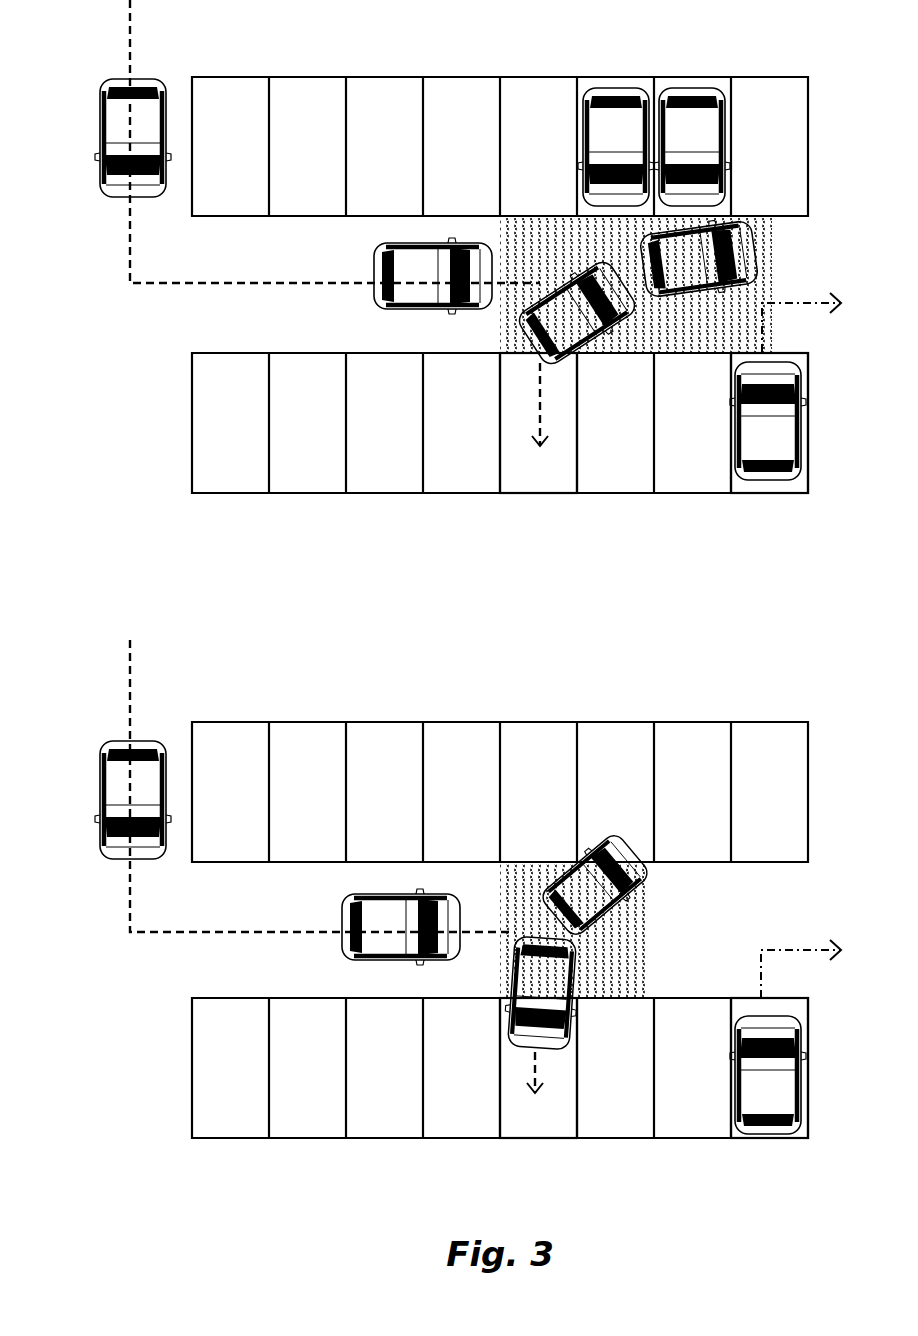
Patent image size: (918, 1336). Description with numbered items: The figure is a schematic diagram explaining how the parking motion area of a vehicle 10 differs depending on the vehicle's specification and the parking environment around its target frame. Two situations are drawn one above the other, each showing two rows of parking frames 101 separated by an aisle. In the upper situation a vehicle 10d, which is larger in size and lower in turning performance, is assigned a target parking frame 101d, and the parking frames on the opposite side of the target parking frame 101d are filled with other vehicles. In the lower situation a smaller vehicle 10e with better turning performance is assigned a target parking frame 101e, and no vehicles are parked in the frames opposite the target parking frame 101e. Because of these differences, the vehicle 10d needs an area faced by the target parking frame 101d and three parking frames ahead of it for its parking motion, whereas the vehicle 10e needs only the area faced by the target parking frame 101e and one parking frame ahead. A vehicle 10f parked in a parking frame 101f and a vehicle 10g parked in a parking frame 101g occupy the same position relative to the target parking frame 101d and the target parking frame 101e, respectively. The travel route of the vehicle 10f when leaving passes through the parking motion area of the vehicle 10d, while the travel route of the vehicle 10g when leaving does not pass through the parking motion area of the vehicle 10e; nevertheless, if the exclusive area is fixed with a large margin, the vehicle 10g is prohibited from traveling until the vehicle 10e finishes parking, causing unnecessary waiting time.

The vehicle 10 is at (582, 151).
The vehicle 10d is at (100, 135).
The vehicle 10e is at (102, 788).
The vehicle 10f is at (737, 423).
The vehicle 10g is at (737, 1072).
The parking frame 101 is at (233, 74).
The target parking frame 101d is at (543, 497).
The target parking frame 101e is at (543, 1142).
The parking frame 101f is at (774, 497).
The parking frame 101g is at (774, 1142).